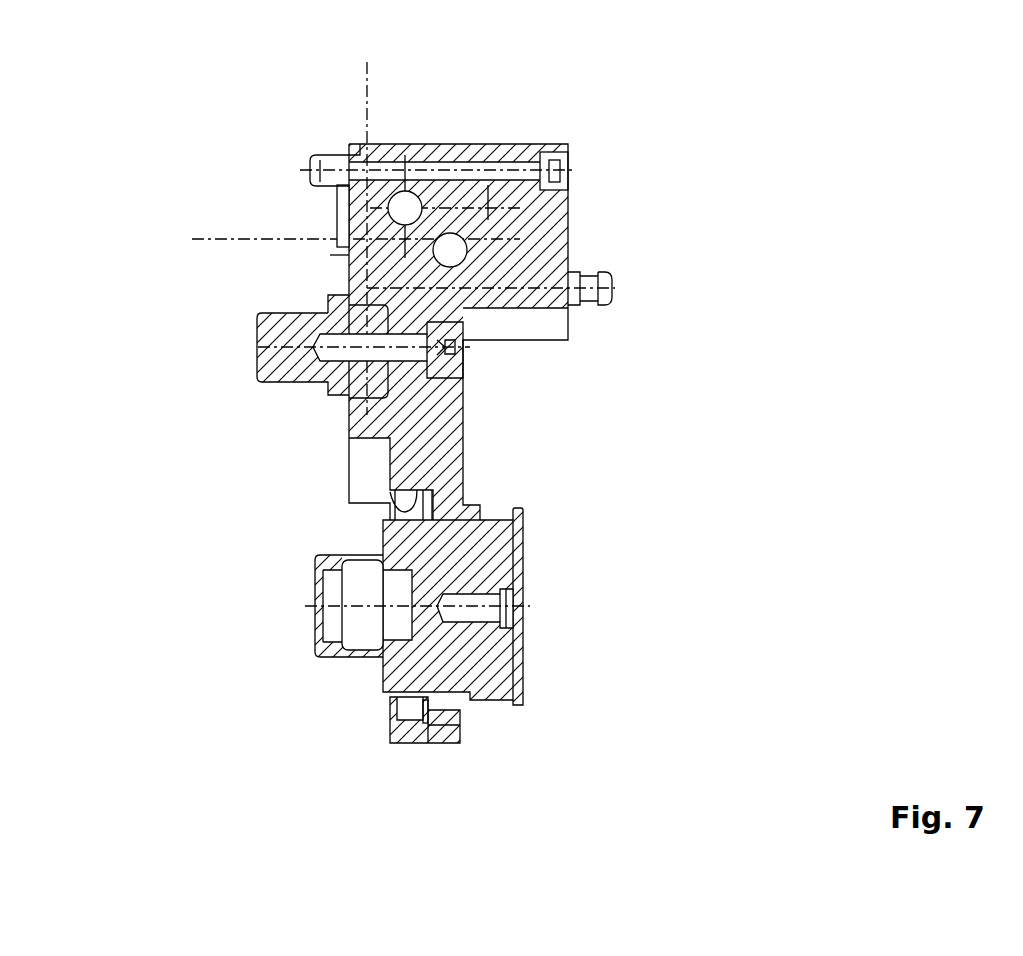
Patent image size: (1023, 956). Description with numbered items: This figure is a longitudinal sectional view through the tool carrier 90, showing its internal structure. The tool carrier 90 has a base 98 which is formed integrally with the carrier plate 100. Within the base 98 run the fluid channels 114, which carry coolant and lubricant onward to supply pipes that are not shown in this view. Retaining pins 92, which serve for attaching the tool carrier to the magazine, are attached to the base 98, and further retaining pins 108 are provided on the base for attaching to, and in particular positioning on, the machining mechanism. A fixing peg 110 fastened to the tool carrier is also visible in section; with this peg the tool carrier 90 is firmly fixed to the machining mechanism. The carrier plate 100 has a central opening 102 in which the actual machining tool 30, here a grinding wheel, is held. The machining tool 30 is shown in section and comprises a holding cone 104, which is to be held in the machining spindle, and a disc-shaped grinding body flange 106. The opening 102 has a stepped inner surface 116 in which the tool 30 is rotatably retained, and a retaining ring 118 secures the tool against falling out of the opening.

The machining tool 30 is at (467, 653).
The tool carrier 90 is at (578, 130).
The retaining pins 92 is at (530, 150).
The base 98 is at (442, 203).
The carrier plate 100 is at (457, 717).
The central opening 102 is at (410, 697).
The holding cone 104 is at (328, 655).
The grinding body flange 106 is at (521, 552).
The retaining pins 108 is at (313, 157).
The fixing peg 110 is at (258, 385).
The fluid channels 114 is at (443, 251).
The stepped inner surface 116 is at (390, 503).
The retaining ring 118 is at (418, 725).